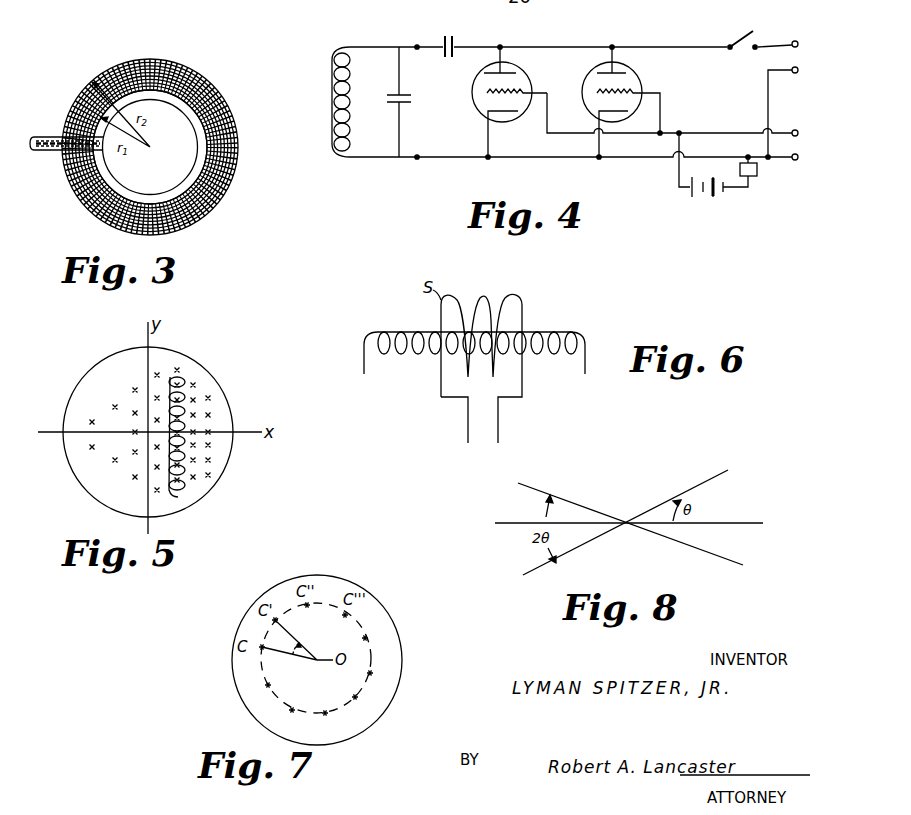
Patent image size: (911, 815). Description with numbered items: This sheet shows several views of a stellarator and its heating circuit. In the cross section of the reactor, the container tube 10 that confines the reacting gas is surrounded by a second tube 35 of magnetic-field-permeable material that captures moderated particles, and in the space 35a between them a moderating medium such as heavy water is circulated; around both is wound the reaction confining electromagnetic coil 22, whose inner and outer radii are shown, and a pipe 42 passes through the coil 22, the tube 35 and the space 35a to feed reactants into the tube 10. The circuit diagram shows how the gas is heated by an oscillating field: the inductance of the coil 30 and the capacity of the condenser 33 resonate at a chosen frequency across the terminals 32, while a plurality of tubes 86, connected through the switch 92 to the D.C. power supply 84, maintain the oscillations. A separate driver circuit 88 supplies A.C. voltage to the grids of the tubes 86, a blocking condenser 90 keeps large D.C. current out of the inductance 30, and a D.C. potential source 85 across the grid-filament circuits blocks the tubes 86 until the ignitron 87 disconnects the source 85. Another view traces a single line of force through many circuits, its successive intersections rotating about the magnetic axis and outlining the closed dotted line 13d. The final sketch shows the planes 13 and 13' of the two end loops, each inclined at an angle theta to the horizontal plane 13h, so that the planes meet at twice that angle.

In FIG. 3, the container tube 10 is at (194, 137).
In FIG. 7, the container tube 10 is at (356, 587).
In FIG. 3, the reaction confining electromagnetic coil 22 is at (227, 121).
In FIG. 3, the second tube 35 is at (196, 178).
In FIG. 3, the space between tubes 35a is at (182, 104).
In FIG. 3, the pipe 42 is at (47, 156).
In FIG. 4, the coil 30 is at (334, 56).
In FIG. 4, the circuit terminals 32 is at (421, 167).
In FIG. 4, the condenser 33 is at (410, 100).
In FIG. 4, the blocking condenser 90 is at (455, 45).
In FIG. 4, the tubes 86 is at (590, 77).
In FIG. 4, the switch 92 is at (743, 44).
In FIG. 4, the D.C. power supply 84 is at (793, 73).
In FIG. 4, the driver circuit 88 is at (793, 155).
In FIG. 4, the D.C. potential source 85 is at (706, 198).
In FIG. 4, the ignitron 87 is at (757, 169).
In FIG. 7, the dotted line 13d is at (366, 634).
In FIG. 8, the plane of end loop 13 is at (627, 510).
In FIG. 8, the plane of end loop 13' is at (630, 524).
In FIG. 8, the horizontal plane 13h is at (755, 520).